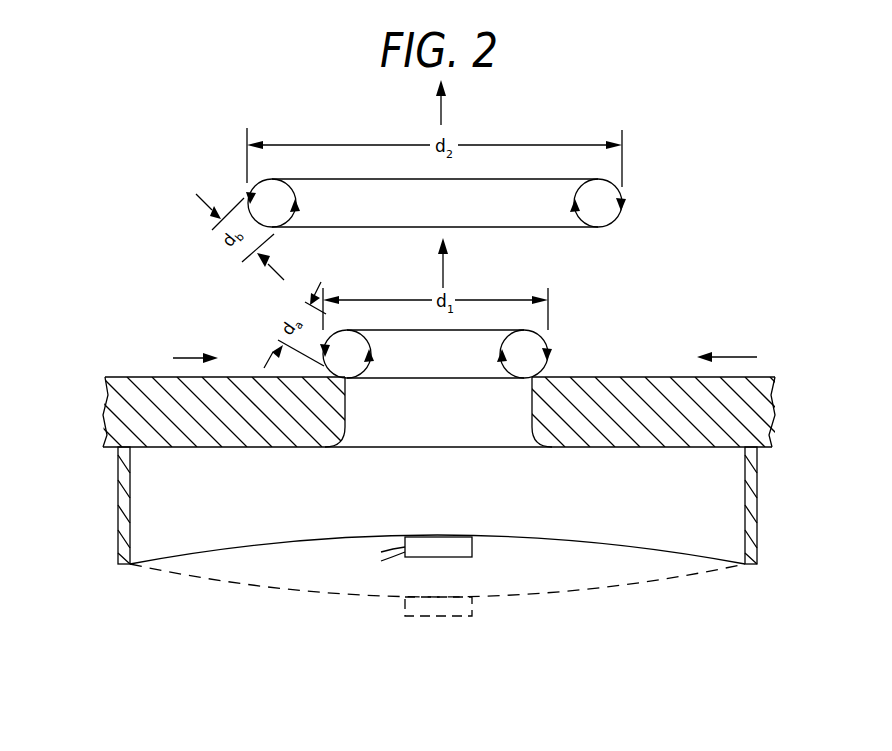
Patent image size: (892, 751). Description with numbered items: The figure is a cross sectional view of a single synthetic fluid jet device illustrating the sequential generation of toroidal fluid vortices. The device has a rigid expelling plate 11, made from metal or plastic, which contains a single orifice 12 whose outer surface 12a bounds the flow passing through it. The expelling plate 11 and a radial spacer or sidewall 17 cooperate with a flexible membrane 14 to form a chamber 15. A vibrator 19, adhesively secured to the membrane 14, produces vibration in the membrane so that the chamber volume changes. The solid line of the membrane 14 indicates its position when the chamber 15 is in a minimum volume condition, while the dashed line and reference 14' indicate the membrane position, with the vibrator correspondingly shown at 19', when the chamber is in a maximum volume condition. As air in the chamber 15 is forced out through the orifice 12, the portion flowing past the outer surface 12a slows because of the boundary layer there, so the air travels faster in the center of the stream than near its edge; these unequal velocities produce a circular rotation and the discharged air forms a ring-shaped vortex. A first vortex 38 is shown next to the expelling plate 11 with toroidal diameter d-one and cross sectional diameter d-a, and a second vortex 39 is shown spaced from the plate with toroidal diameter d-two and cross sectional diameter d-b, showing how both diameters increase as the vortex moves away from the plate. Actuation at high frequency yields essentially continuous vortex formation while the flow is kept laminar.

The expelling plate 11 is at (765, 375).
The orifice 12 is at (367, 431).
The outer surface 12a is at (534, 406).
The membrane 14 is at (437, 529).
The membrane position at maximum volume 14' is at (437, 602).
The chamber 15 is at (480, 513).
The sidewall 17 is at (758, 538).
The vibrator 19 is at (453, 561).
The vibrator position at maximum volume 19' is at (463, 627).
The first vortex 38 is at (548, 342).
The second vortex 39 is at (620, 192).